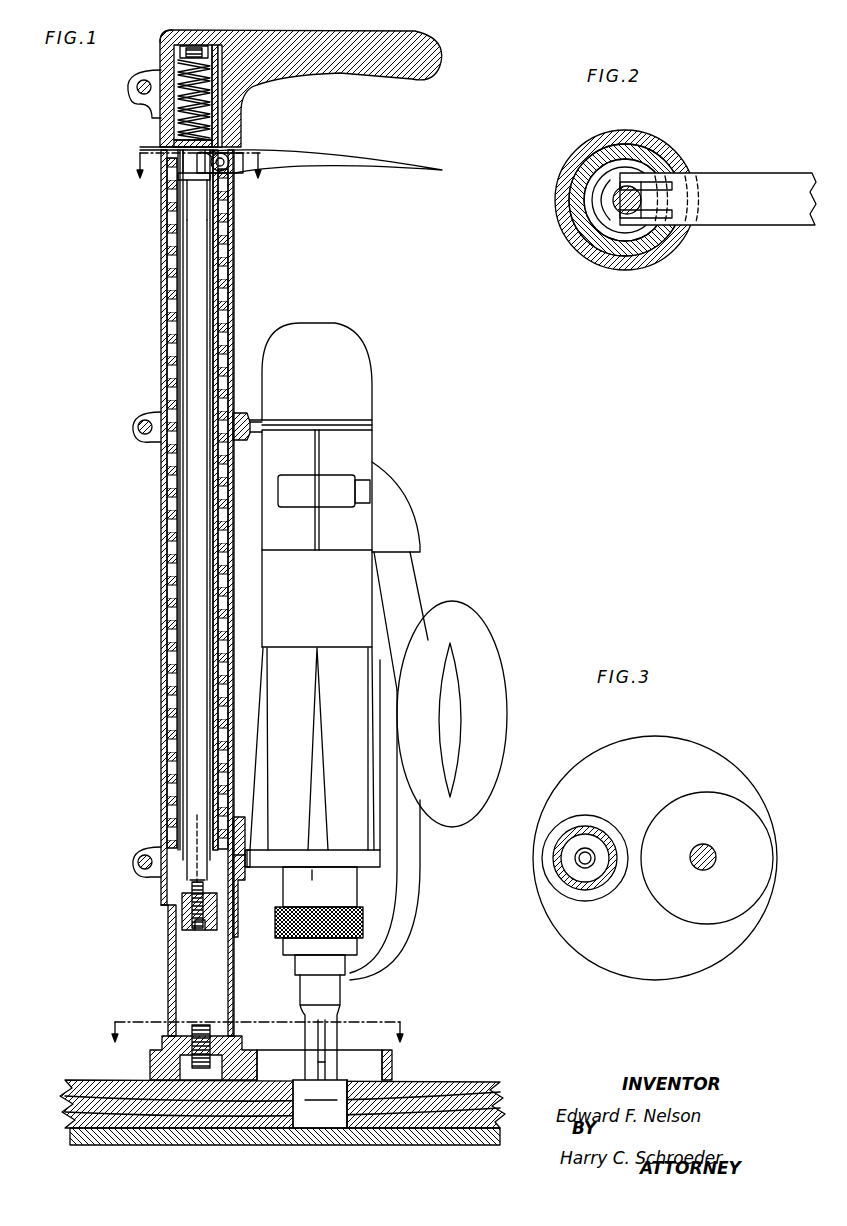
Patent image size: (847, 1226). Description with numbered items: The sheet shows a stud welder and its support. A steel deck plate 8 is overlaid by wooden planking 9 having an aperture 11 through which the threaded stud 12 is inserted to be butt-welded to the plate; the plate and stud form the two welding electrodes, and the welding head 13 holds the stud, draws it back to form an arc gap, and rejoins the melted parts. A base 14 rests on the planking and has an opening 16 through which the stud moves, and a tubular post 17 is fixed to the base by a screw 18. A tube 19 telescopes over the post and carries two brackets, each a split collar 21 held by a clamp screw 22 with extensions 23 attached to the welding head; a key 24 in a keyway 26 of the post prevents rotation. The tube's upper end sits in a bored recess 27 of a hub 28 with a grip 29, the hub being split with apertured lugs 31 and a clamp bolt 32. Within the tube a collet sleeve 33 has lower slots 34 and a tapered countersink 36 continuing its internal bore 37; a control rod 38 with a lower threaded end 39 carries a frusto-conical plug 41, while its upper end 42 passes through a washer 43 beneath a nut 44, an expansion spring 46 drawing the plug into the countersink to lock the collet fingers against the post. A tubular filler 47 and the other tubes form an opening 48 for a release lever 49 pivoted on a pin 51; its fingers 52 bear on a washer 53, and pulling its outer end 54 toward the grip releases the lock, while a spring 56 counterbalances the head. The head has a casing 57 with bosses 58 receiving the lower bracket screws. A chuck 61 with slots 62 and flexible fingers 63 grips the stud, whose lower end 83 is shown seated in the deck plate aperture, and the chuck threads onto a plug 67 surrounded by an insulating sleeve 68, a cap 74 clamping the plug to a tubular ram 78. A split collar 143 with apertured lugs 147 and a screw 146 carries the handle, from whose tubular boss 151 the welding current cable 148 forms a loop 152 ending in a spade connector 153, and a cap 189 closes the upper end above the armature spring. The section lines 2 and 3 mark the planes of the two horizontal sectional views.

In FIG. 1, the section line 2— 2 is at (198, 176).
In FIG. 1, the section line 3— 3 is at (256, 1027).
In FIG. 1, the steel deck plate 8 is at (500, 1134).
In FIG. 1, the wooden planking 9 is at (452, 1082).
In FIG. 1, the aperture 11 is at (343, 1082).
In FIG. 1, the threaded stud 12 is at (334, 1108).
In FIG. 1, the welding head 13 is at (383, 440).
In FIG. 1, the base 14 is at (158, 1064).
In FIG. 3, the base 14 is at (626, 972).
In FIG. 1, the opening 16 is at (262, 1050).
In FIG. 3, the opening 16 is at (750, 840).
In FIG. 1, the tubular post 17 is at (168, 982).
In FIG. 3, the tubular post 17 is at (585, 828).
In FIG. 1, the screw 18 is at (200, 1030).
In FIG. 3, the screw 18 is at (592, 853).
In FIG. 1, the tube 19 is at (166, 770).
In FIG. 2, the tube 19 is at (585, 245).
In FIG. 1, the split collar 21 is at (238, 420).
In FIG. 1, the clamp screw 22 is at (138, 434).
In FIG. 1, the extensions 23 is at (280, 425).
In FIG. 1, the key 24 is at (246, 852).
In FIG. 1, the keyway 26 is at (236, 706).
In FIG. 1, the bored recess 27 is at (222, 48).
In FIG. 1, the hub 28 is at (232, 128).
In FIG. 1, the grip 29 is at (403, 48).
In FIG. 1, the apertured lugs 31 is at (140, 98).
In FIG. 1, the clamp bolt 32 is at (137, 87).
In FIG. 1, the collet sleeve 33 is at (170, 292).
In FIG. 2, the collet sleeve 33 is at (614, 204).
In FIG. 1, the slots 34 is at (192, 832).
In FIG. 1, the tapered countersink 36 is at (182, 918).
In FIG. 1, the internal bore 37 is at (178, 688).
In FIG. 2, the internal bore 37 is at (590, 197).
In FIG. 1, the control rod 38 is at (195, 606).
In FIG. 2, the control rod 38 is at (605, 212).
In FIG. 1, the lower threaded end 39 is at (190, 900).
In FIG. 1, the frusto-conical plug 41 is at (188, 928).
In FIG. 1, the upper end of control rod 42 is at (145, 148).
In FIG. 1, the washer 43 is at (180, 143).
In FIG. 1, the nut 44 is at (185, 52).
In FIG. 1, the expansion spring 46 is at (185, 72).
In FIG. 1, the tubular filler 47 is at (218, 108).
In FIG. 2, the tubular filler 47 is at (595, 258).
In FIG. 2, the opening 48 is at (670, 168).
In FIG. 1, the release lever 49 is at (238, 172).
In FIG. 2, the release lever 49 is at (710, 220).
In FIG. 1, the pin 51 is at (224, 160).
In FIG. 2, the pin 51 is at (690, 198).
In FIG. 1, the fingers 52 is at (200, 172).
In FIG. 2, the fingers 52 is at (625, 185).
In FIG. 1, the washer 53 is at (190, 185).
In FIG. 2, the washer 53 is at (640, 178).
In FIG. 1, the outer end of release lever 54 is at (360, 163).
In FIG. 1, the axially expansible spring 56 is at (172, 334).
In FIG. 1, the casing 57 is at (326, 600).
In FIG. 1, the bosses 58 is at (322, 773).
In FIG. 1, the chuck 61 is at (312, 880).
In FIG. 1, the slots 62 is at (326, 1033).
In FIG. 1, the flexible fingers 63 is at (310, 1065).
In FIG. 1, the plug 67 is at (305, 965).
In FIG. 1, the insulating sleeve 68 is at (296, 950).
In FIG. 1, the cap 74 is at (278, 929).
In FIG. 1, the tubular ram 78 is at (350, 890).
In FIG. 1, the stem tip 83 is at (318, 1118).
In FIG. 1, the split collar 143 is at (358, 453).
In FIG. 1, the screw 146 is at (360, 504).
In FIG. 1, the apertured lugs 147 is at (296, 482).
In FIG. 1, the welding current cable 148 is at (398, 577).
In FIG. 1, the tubular boss 151 is at (405, 515).
In FIG. 1, the loop 152 is at (497, 714).
In FIG. 1, the spade connector 153 is at (410, 915).
In FIG. 1, the cap 189 is at (357, 380).